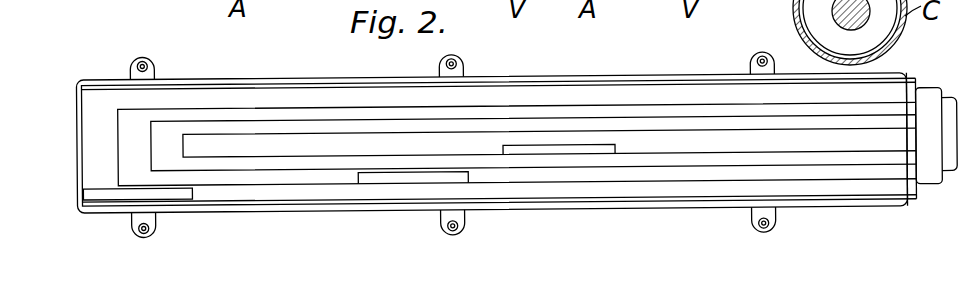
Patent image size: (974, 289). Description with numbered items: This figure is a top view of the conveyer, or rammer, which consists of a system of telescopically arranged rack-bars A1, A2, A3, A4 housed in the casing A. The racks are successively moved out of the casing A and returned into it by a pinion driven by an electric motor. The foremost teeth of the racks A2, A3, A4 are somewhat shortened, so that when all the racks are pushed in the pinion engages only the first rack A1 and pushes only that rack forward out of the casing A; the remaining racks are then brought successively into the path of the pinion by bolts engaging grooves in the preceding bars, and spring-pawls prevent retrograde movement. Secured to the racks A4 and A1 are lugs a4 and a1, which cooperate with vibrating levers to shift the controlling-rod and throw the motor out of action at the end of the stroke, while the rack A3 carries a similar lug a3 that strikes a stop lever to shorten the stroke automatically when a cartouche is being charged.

The casing A is at (241, 211).
The first rack-bar A1 is at (883, 147).
The rack-bar A2 is at (820, 127).
The rack-bar A3 is at (712, 113).
The rack-bar A4 is at (633, 102).
The lug a1 is at (527, 150).
The lug a3 is at (372, 178).
The lug a4 is at (102, 197).